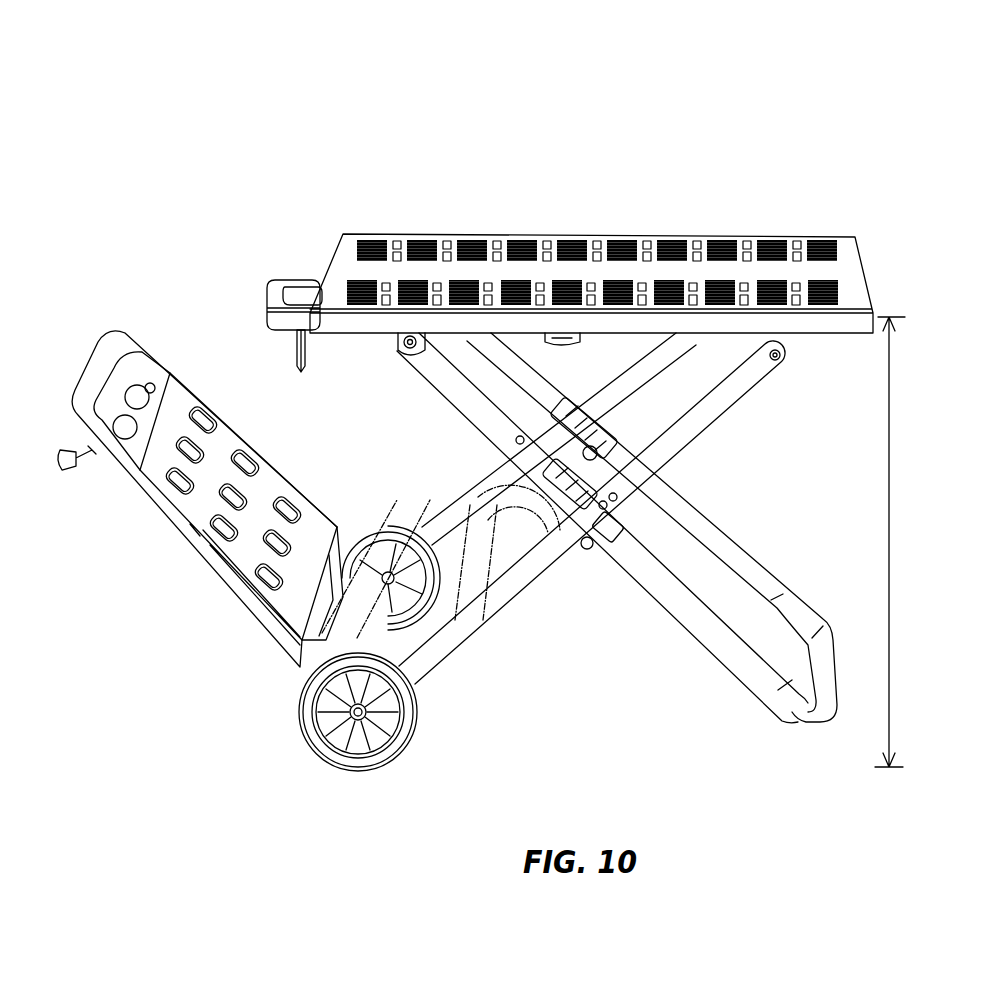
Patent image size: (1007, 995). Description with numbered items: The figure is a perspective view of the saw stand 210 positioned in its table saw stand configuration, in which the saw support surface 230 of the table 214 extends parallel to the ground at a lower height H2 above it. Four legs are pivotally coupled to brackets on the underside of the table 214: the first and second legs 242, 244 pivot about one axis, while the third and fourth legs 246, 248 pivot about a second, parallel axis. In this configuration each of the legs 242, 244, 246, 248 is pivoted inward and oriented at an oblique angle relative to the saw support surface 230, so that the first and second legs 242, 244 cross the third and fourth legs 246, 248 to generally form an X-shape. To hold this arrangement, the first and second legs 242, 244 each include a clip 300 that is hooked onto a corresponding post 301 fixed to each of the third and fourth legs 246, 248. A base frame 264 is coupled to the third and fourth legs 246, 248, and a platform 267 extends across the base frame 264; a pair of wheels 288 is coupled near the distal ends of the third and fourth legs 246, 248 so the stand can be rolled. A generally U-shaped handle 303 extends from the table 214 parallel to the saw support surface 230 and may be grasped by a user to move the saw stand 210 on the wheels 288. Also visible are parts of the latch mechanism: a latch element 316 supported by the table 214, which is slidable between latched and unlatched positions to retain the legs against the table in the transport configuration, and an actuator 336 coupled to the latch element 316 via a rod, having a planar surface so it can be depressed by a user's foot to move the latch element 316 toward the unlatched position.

The saw stand 210 is at (861, 103).
The table 214 is at (645, 227).
The saw support surface 230 is at (345, 255).
The handle 303 is at (270, 290).
The actuator 336 is at (304, 358).
The latch element 316 is at (569, 314).
The first leg 242 is at (450, 383).
The second leg 244 is at (548, 382).
The third leg 246 is at (720, 412).
The fourth leg 248 is at (628, 394).
The clip 300 is at (629, 536).
The post 301 is at (565, 468).
The wheels 288 is at (330, 740).
The base frame 264 is at (200, 499).
The platform 267 is at (222, 440).
The lower height H2 is at (889, 523).